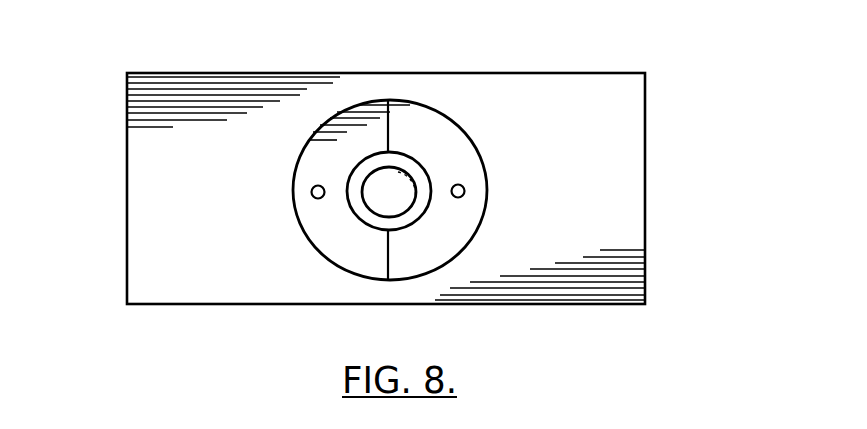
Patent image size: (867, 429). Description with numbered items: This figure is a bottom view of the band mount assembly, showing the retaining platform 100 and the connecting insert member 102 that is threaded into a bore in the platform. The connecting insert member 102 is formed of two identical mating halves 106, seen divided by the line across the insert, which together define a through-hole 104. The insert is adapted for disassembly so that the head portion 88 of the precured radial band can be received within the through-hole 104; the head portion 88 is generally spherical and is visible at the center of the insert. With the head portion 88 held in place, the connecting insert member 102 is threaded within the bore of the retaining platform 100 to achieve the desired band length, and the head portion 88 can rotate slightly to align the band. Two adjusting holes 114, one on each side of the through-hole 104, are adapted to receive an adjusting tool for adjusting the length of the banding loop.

The retaining platform 100 is at (607, 192).
The connecting insert member 102 is at (443, 145).
The through-hole 104 is at (417, 213).
The mating halves 106 is at (347, 147).
The head portion 88 is at (370, 203).
The adjusting holes 114 is at (312, 192).